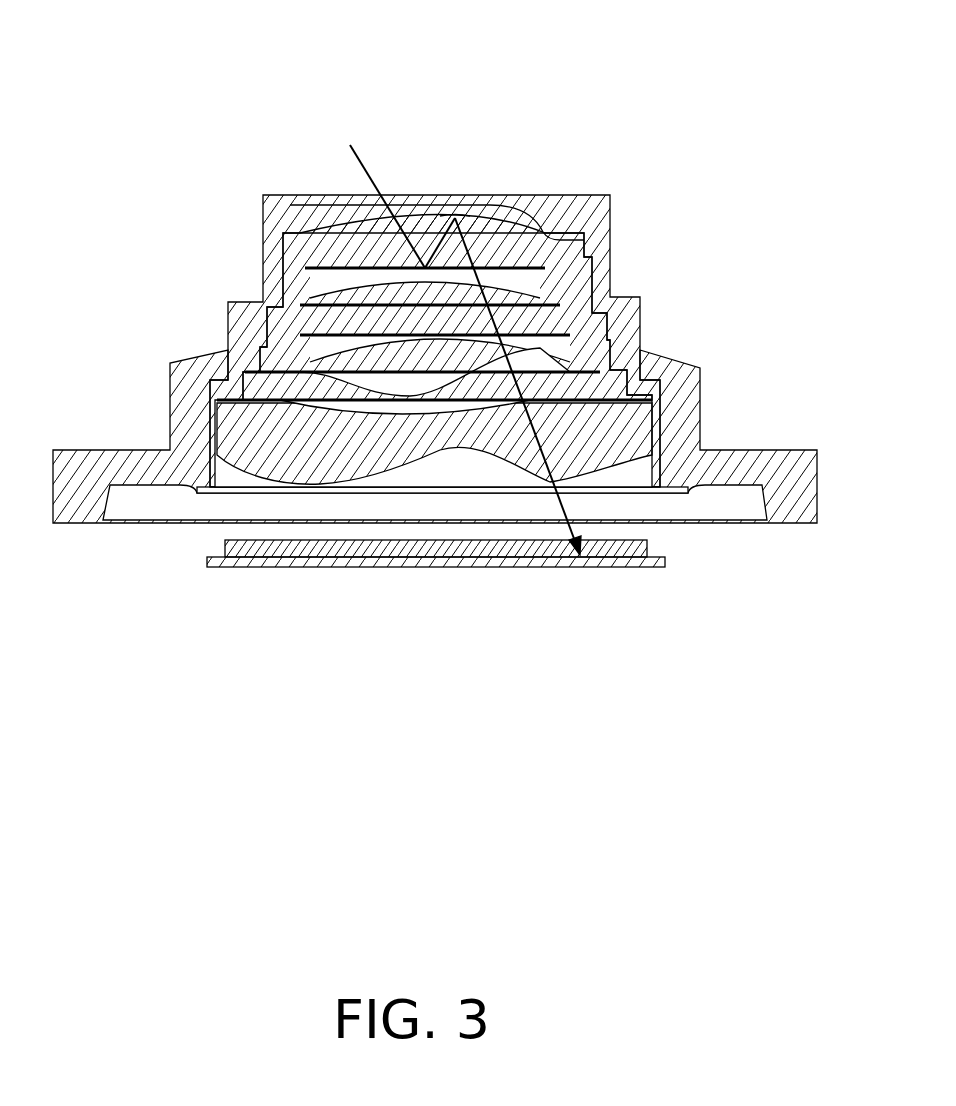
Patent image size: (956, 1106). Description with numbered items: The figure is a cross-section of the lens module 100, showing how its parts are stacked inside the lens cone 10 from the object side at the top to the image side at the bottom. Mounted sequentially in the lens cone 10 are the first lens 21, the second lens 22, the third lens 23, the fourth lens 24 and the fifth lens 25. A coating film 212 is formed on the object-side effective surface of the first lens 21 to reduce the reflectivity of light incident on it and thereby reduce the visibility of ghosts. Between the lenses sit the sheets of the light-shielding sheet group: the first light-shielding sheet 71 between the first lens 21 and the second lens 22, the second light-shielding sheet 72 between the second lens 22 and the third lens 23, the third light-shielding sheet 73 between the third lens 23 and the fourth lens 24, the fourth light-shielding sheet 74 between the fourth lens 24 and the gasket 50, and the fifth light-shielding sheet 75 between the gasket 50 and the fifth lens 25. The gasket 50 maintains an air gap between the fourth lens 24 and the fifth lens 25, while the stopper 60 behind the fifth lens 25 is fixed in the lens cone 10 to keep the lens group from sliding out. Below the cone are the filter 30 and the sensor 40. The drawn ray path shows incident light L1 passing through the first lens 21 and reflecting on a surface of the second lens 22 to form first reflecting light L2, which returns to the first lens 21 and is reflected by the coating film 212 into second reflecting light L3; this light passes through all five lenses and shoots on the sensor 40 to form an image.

The lens module 100 is at (435, 320).
The lens cone 10 is at (585, 212).
The first lens 21 is at (586, 252).
The coating film 212 is at (467, 218).
The second lens 22 is at (588, 287).
The third lens 23 is at (590, 330).
The fourth lens 24 is at (607, 355).
The fifth lens 25 is at (638, 447).
The first light-shielding sheet 71 is at (320, 260).
The second light-shielding sheet 72 is at (377, 297).
The third light-shielding sheet 73 is at (340, 320).
The fourth light-shielding sheet 74 is at (270, 370).
The fifth light-shielding sheet 75 is at (580, 402).
The gasket 50 is at (650, 375).
The stopper 60 is at (658, 492).
The filter 30 is at (340, 550).
The sensor 40 is at (262, 567).
The incident light L1 is at (367, 173).
The first reflecting light L2 is at (437, 240).
The second reflecting light L3 is at (558, 497).